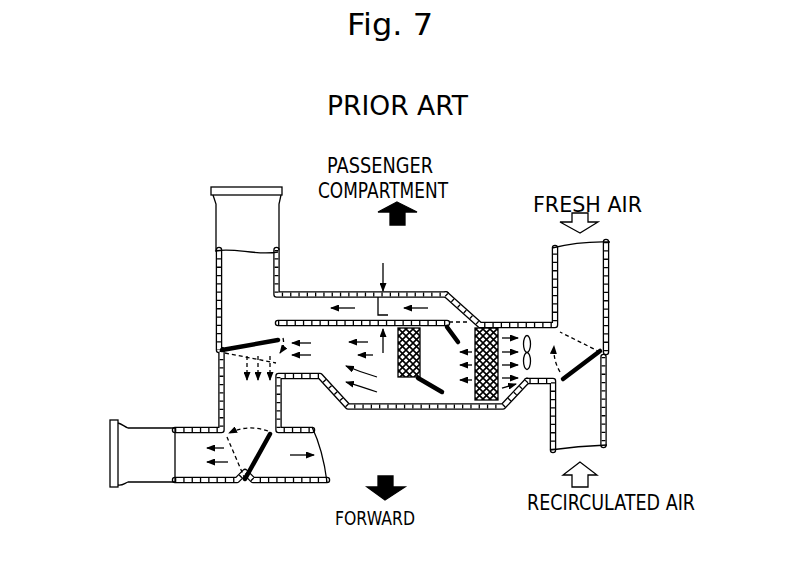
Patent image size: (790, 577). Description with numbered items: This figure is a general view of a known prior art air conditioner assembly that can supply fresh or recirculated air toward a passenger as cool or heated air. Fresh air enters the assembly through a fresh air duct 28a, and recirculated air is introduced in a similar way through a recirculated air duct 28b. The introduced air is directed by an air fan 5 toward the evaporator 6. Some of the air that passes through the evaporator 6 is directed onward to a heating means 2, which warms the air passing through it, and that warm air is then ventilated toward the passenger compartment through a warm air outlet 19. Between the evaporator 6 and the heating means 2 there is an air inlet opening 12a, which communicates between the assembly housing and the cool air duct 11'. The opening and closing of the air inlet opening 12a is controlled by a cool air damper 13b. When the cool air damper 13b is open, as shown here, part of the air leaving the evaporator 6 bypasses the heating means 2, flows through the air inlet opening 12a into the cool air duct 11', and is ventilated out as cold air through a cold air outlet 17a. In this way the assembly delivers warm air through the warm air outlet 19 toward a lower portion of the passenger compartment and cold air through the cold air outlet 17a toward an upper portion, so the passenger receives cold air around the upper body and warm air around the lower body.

The cold air outlet 17a is at (242, 186).
The cool air duct 11' is at (362, 276).
The air inlet opening 12a is at (456, 318).
The cool air damper 13b is at (447, 334).
The heating means 2 is at (409, 378).
The evaporator 6 is at (487, 401).
The air fan 5 is at (522, 374).
The warm air outlet 19 is at (109, 448).
The fresh air duct 28a is at (612, 263).
The recirculated air duct 28b is at (607, 414).